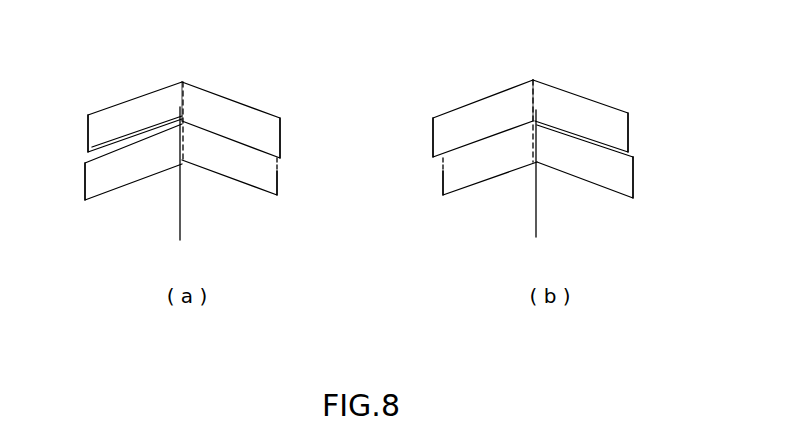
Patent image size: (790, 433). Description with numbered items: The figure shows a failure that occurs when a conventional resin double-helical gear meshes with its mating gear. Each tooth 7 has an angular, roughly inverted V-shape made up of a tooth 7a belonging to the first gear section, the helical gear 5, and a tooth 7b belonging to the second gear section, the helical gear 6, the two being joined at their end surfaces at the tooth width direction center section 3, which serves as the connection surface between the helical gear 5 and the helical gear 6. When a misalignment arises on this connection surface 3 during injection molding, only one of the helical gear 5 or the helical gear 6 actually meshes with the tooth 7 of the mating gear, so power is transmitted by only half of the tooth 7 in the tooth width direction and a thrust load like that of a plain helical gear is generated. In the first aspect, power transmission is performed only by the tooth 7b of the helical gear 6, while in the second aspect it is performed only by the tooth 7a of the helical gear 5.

The tooth width direction center section 3 is at (182, 82).
The first gear section 5 is at (93, 135).
The second gear section 6 is at (268, 135).
The tooth 7 is at (243, 107).
The tooth on the helical gear 5 side 7a is at (128, 113).
The tooth on the helical gear 6 side 7b is at (260, 118).